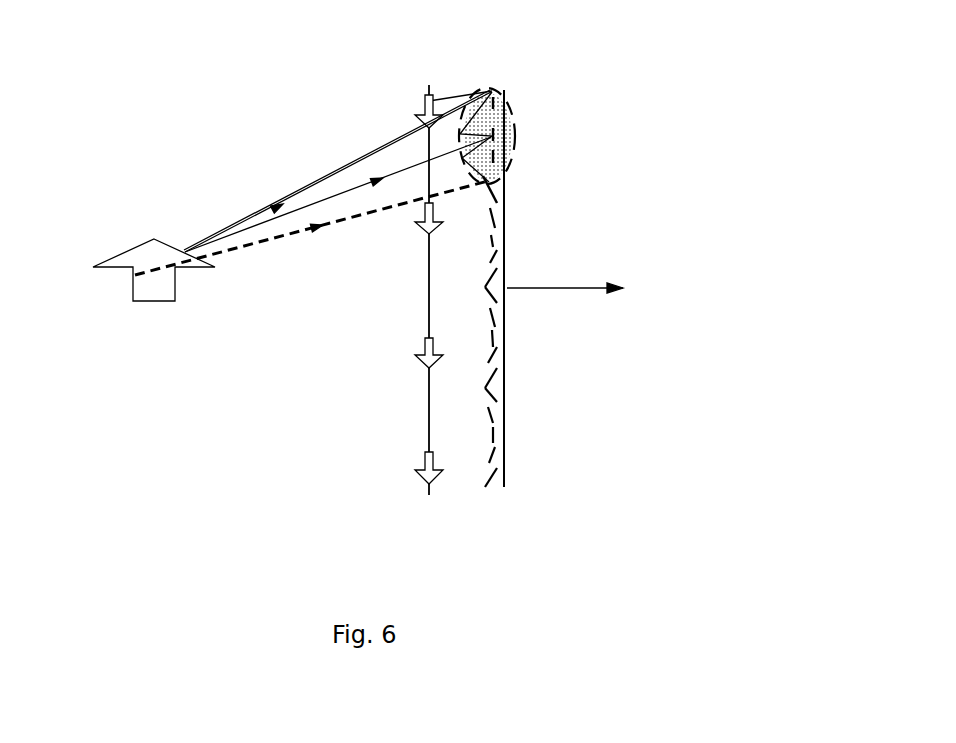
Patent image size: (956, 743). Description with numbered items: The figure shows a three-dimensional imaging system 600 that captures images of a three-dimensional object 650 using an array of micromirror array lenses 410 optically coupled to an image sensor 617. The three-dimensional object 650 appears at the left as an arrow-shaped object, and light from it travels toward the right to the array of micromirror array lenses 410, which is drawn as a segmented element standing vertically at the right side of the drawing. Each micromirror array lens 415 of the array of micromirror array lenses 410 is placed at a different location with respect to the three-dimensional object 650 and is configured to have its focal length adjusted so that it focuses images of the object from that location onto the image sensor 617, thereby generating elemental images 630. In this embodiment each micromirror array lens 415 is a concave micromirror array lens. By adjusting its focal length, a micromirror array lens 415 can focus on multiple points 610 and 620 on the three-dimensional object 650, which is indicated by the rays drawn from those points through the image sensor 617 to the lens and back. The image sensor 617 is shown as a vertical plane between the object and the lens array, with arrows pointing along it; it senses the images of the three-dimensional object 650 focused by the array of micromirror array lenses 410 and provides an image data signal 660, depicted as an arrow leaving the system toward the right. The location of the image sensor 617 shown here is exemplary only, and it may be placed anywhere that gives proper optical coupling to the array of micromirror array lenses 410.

The three-dimensional imaging system 600 is at (555, 75).
The array of micromirror array lenses 410 is at (493, 492).
The micromirror array lens 415 is at (480, 84).
The elemental images 630 is at (492, 135).
The image sensor 617 is at (423, 427).
The three-dimensional object 650 is at (129, 294).
The point on the three-dimensional object 610 is at (186, 250).
The point on the three-dimensional object 620 is at (134, 267).
The image data signal 660 is at (567, 278).